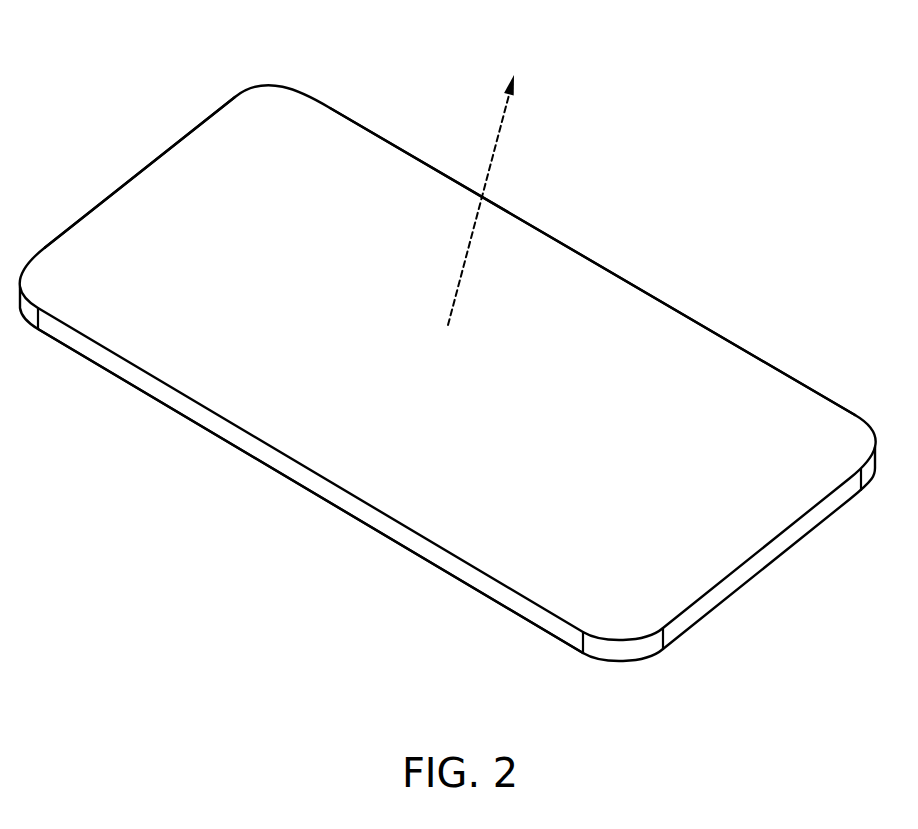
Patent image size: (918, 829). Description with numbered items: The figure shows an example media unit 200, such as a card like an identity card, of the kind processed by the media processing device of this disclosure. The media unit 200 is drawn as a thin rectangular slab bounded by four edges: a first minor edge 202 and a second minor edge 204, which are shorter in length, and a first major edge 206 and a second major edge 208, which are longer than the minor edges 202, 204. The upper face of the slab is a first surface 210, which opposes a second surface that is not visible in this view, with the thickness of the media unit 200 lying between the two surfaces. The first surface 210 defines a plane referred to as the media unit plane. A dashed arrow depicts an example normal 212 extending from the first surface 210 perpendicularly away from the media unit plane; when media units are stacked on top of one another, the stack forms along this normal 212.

The media unit 200 is at (128, 53).
The first minor edge 202 is at (765, 566).
The second minor edge 204 is at (133, 177).
The first major edge 206 is at (310, 490).
The second major edge 208 is at (588, 257).
The first surface 210 is at (472, 403).
The normal 212 is at (497, 138).